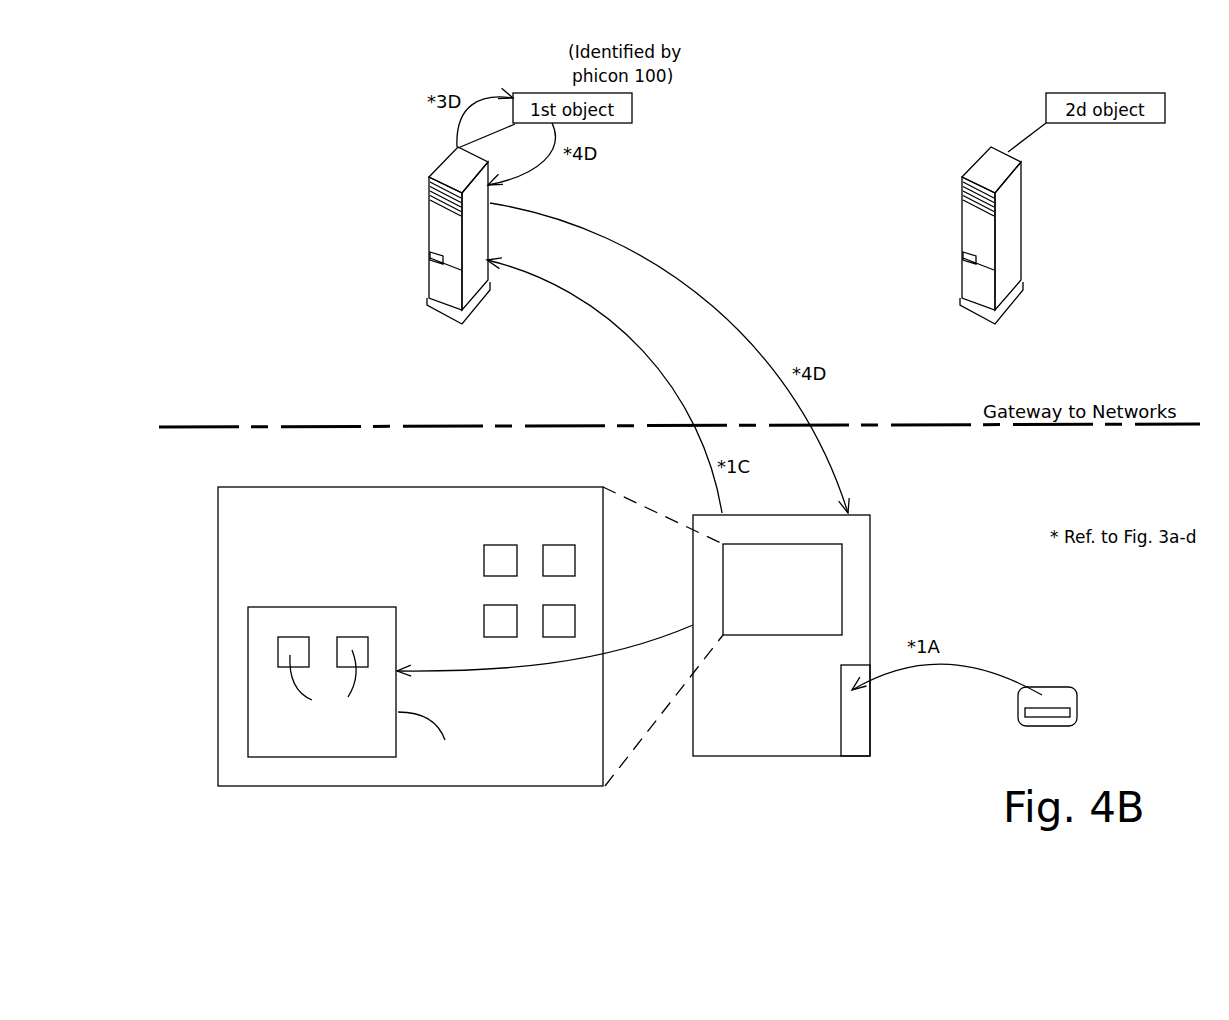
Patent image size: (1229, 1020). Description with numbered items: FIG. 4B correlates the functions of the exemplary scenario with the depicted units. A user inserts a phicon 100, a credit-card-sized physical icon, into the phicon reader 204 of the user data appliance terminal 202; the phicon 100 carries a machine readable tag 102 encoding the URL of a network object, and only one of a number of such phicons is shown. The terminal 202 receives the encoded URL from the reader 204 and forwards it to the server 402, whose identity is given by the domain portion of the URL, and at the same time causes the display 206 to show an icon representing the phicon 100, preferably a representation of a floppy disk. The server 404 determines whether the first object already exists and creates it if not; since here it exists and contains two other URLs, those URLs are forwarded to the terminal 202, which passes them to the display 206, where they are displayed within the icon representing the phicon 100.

The phicon 100 is at (1067, 687).
The machine readable tag 102 is at (1053, 707).
The user data appliance terminal 202 is at (718, 763).
The phicon reader 204 is at (832, 690).
The display 206 is at (800, 645).
The network server 402 is at (1022, 237).
The network server 404 is at (427, 196).